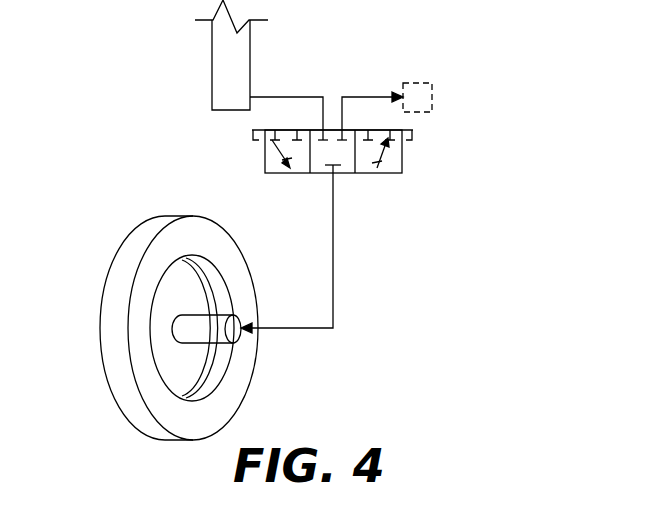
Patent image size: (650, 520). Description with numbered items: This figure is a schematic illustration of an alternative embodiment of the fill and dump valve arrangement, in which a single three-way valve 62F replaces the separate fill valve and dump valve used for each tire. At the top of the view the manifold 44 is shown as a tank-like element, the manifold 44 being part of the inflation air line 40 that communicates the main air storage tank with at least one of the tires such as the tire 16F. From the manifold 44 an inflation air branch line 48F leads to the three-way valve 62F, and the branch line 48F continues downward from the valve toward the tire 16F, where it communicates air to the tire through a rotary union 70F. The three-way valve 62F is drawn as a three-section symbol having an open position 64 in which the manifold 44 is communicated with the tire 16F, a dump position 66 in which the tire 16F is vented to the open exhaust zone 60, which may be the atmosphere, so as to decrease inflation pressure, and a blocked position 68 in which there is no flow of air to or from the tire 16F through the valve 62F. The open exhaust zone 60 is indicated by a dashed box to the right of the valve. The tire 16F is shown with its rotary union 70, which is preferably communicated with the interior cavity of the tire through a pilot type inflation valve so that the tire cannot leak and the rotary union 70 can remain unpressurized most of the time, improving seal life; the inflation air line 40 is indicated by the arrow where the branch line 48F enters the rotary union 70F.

The manifold 44 is at (212, 65).
The inflation air branch line 48F is at (282, 97).
The open exhaust zone 60 is at (433, 97).
The three-way valve 62F is at (402, 157).
The open position 64 is at (298, 177).
The dump position 66 is at (390, 174).
The blocked position 68 is at (343, 175).
The tire 16F is at (243, 360).
The rotary union 70F is at (208, 322).
The rotary union 70 is at (192, 346).
The inflation air line 40 is at (337, 318).